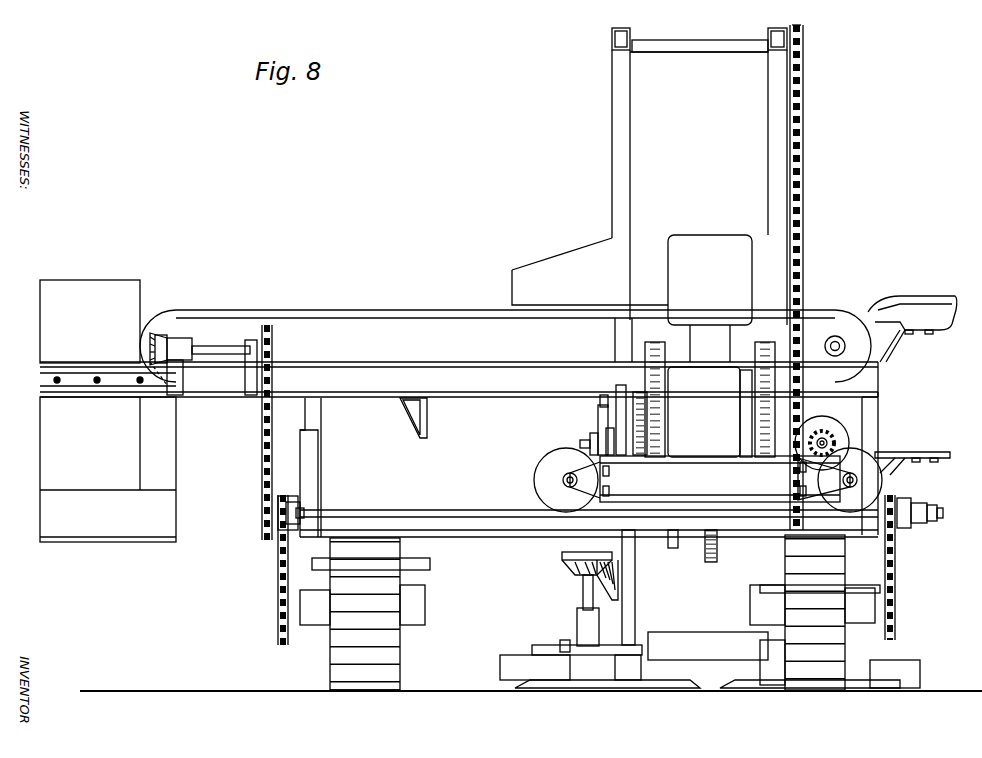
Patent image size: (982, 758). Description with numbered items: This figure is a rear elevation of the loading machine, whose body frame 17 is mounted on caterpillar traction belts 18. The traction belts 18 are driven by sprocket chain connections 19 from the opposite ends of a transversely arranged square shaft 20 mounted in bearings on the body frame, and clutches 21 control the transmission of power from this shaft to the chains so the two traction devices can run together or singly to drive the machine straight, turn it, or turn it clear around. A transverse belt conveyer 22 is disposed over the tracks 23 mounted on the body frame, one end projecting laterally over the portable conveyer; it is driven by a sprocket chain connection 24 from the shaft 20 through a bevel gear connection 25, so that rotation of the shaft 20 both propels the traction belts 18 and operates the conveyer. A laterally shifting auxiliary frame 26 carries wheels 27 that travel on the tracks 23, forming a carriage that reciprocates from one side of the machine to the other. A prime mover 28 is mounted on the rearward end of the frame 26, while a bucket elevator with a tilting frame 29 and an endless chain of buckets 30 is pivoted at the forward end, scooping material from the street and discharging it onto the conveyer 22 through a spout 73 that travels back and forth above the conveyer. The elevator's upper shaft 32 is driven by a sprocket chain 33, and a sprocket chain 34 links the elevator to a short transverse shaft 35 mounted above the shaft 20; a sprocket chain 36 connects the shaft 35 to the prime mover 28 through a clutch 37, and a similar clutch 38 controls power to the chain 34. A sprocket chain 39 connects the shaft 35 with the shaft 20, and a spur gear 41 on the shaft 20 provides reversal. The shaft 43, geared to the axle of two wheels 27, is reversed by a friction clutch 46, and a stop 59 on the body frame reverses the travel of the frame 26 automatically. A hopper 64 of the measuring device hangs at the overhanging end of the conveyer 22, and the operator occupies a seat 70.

The body frame 17 is at (880, 428).
The caterpillar traction belts 18 is at (385, 665).
The sprocket chain connections 19 is at (278, 575).
The square shaft 20 is at (928, 512).
The clutches 21 is at (292, 498).
The belt conveyer 22 is at (505, 336).
The tracks 23 is at (484, 536).
The sprocket chain connection 24 is at (262, 449).
The bevel gear connection 25 is at (176, 336).
The auxiliary frame 26 is at (720, 479).
The wheels 27 is at (540, 466).
The prime mover 28 is at (710, 399).
The tilting frame 29 is at (618, 181).
The endless chain of buckets 30 is at (703, 44).
The upper shaft 32 is at (804, 99).
The sprocket chain 33 is at (805, 220).
The sprocket chain 34 is at (605, 426).
The short transverse shaft 35 is at (585, 442).
The sprocket chain 36 is at (640, 396).
The clutch 37 is at (618, 395).
The clutch 38 is at (600, 438).
The sprocket chain 39 is at (668, 548).
The spur gear 41 is at (718, 556).
The shaft 43 is at (826, 440).
The friction clutch 46 is at (812, 432).
The stop 59 is at (427, 427).
The hopper 64 is at (42, 413).
The seat 70 is at (918, 305).
The spout 73 is at (632, 119).